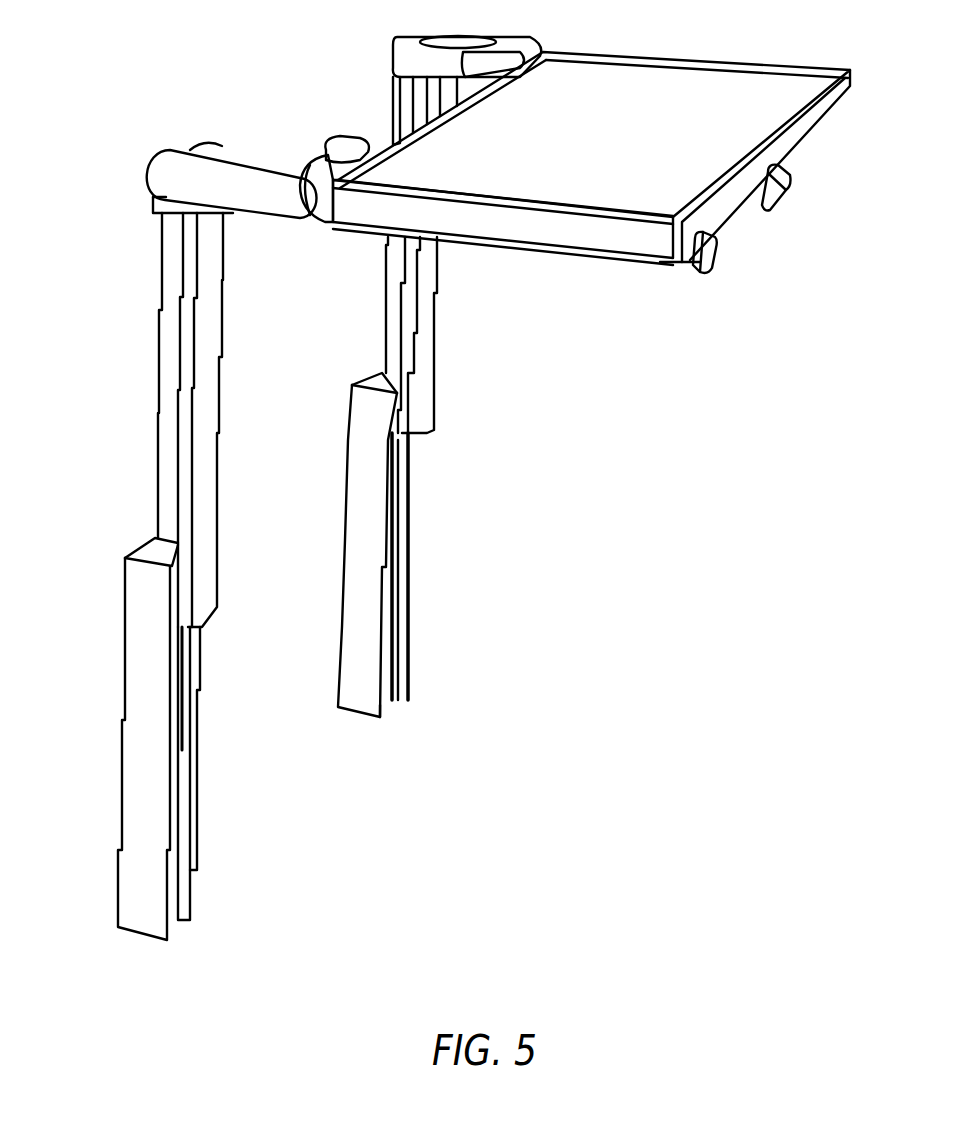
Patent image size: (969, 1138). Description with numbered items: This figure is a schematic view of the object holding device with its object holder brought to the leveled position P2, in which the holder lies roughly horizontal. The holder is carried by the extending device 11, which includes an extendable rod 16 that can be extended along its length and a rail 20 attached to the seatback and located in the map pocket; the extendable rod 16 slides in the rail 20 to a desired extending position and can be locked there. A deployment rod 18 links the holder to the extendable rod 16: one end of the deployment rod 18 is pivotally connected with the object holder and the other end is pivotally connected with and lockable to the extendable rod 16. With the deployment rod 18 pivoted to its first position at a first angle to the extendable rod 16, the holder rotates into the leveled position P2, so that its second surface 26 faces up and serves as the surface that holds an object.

The extending device 11 is at (116, 689).
The extendable rod 16 is at (197, 443).
The deployment rod 18 is at (263, 193).
The rail 20 is at (375, 563).
The second surface 26 is at (643, 82).
The leveled position P2 is at (746, 233).